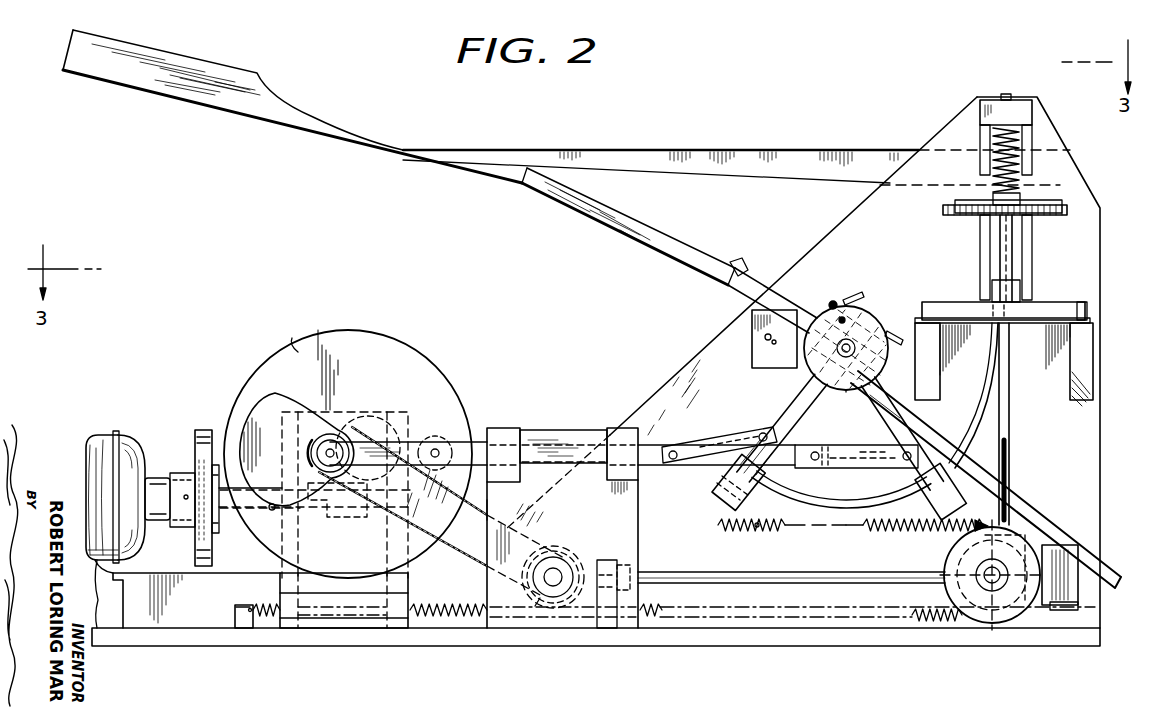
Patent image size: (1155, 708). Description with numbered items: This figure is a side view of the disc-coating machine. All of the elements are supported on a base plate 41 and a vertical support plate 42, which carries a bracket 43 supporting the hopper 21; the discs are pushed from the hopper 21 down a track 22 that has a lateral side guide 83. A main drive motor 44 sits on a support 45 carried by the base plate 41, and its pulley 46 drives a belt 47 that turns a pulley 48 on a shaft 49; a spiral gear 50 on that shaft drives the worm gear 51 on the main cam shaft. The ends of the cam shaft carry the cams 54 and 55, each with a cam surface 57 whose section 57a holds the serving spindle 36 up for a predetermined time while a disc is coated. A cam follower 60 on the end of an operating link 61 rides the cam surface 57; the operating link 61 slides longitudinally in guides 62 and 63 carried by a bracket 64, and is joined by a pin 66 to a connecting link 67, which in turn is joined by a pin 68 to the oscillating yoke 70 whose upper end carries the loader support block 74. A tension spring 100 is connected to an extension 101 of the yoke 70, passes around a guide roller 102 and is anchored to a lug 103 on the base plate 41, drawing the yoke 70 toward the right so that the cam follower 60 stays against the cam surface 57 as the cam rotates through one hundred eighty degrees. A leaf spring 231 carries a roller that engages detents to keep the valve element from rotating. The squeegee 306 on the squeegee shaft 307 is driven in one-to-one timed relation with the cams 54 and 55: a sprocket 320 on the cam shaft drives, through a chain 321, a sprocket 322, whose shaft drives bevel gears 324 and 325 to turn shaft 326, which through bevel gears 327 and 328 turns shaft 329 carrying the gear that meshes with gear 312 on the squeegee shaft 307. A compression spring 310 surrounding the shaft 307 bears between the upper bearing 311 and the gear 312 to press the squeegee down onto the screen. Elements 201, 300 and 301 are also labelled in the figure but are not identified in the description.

The hopper 21 is at (256, 76).
The track 22 is at (760, 312).
The serving spindle 36 is at (806, 500).
The base plate 41 is at (406, 636).
The vertical support plate 42 is at (908, 205).
The bracket 43 is at (693, 150).
The main drive motor 44 is at (100, 440).
The support 45 is at (98, 628).
The pulley 46 is at (195, 535).
The belt 47 is at (204, 430).
The pulley 48 is at (197, 428).
The shaft 49 is at (232, 508).
The spiral gear 50 is at (352, 517).
The worm gear 51 is at (370, 428).
The cam 54 is at (282, 338).
The cam 55 is at (340, 330).
The cam surface 57 is at (272, 510).
The section of cam curve 57a is at (238, 457).
The cam follower 60 is at (325, 435).
The operating link 61 is at (492, 430).
The guide 62 is at (500, 428).
The guide 63 is at (612, 428).
The bracket 64 is at (596, 515).
The pin 66 is at (673, 460).
The connecting link 67 is at (728, 438).
The pin 68 is at (763, 432).
The yoke 70 is at (789, 391).
The loader support block 74 is at (856, 292).
The lateral side guide 83 is at (1114, 572).
The tension spring 100 is at (836, 296).
The extension 101 is at (718, 510).
The guide roller 102 is at (1012, 608).
The lug 103 is at (242, 628).
The disc pivot 201 is at (850, 392).
The leaf spring 231 is at (762, 340).
The platform 300 is at (1094, 316).
The platform end plate 301 is at (1094, 302).
The squeegee 306 is at (984, 282).
The squeegee shaft 307 is at (1012, 238).
The compression spring 310 is at (1015, 145).
The upper bearing 311 is at (1016, 103).
The gear 312 is at (1065, 210).
The sprocket 320 is at (360, 420).
The chain 321 is at (488, 492).
The sprocket 322 is at (560, 556).
The bevel gear 324 is at (545, 595).
The bevel gear 325 is at (558, 600).
The shaft 326 is at (704, 576).
The bevel gear 327 is at (1040, 545).
The bevel gear 328 is at (1040, 540).
The shaft 329 is at (1010, 438).